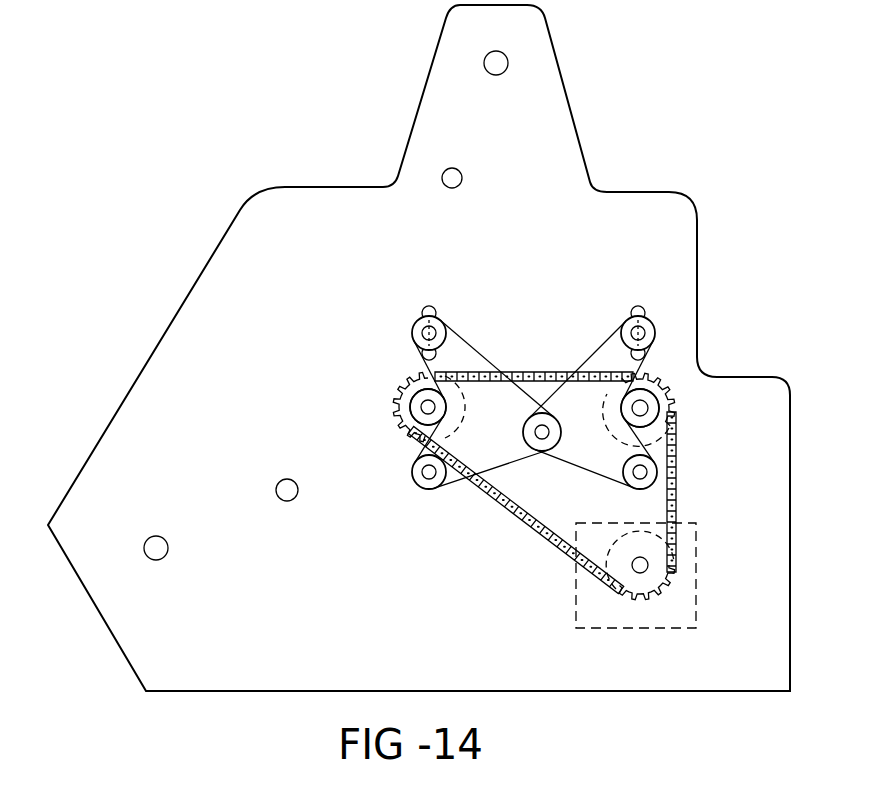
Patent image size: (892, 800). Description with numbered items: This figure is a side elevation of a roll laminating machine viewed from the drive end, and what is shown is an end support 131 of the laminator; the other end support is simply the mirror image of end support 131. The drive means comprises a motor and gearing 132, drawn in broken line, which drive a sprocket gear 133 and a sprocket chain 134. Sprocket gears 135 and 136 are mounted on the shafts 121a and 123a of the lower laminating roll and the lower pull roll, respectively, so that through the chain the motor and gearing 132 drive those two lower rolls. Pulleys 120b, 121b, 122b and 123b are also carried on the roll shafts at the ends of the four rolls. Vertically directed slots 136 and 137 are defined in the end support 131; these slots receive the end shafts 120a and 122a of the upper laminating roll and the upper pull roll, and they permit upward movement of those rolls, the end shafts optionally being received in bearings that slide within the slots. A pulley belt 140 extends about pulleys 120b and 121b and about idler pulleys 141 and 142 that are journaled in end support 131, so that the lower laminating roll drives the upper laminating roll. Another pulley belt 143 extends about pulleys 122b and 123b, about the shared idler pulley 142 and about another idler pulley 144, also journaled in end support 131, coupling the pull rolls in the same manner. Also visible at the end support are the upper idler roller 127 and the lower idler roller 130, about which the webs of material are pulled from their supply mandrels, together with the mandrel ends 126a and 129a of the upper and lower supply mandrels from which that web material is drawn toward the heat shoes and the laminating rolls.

The end shaft 120a is at (418, 330).
The pulley 120b is at (444, 322).
The shaft 121a is at (416, 412).
The pulley 121b is at (404, 384).
The end shaft 122a is at (646, 330).
The pulley 122b is at (624, 328).
The shaft 123a is at (646, 413).
The pulley 123b is at (661, 408).
The upper supply mandrel end 126a is at (506, 66).
The upper idler roller 127 is at (459, 172).
The lower supply mandrel end 129a is at (151, 544).
The lower idler roller 130 is at (278, 484).
The end support 131 is at (386, 652).
The motor and gearing 132 is at (697, 617).
The sprocket gear 133 is at (649, 563).
The sprocket chain 134 is at (540, 540).
The sprocket gear 135 is at (395, 404).
The sprocket gear / vertically directed slot 136 is at (431, 310).
The vertically directed slot 137 is at (637, 308).
The pulley belt 140 is at (505, 459).
The idler pulley 141 is at (430, 490).
The idler pulley 142 is at (523, 432).
The pulley belt 143 is at (596, 370).
The idler pulley 144 is at (640, 490).